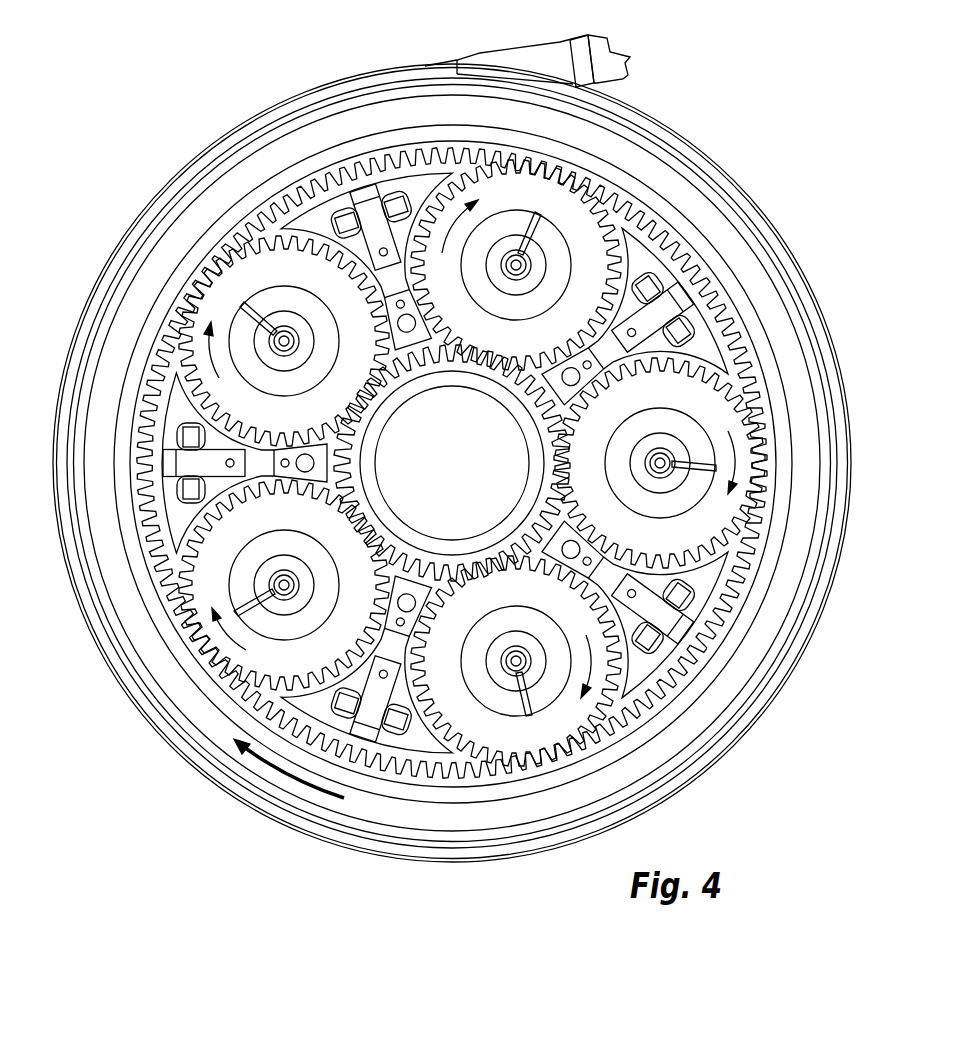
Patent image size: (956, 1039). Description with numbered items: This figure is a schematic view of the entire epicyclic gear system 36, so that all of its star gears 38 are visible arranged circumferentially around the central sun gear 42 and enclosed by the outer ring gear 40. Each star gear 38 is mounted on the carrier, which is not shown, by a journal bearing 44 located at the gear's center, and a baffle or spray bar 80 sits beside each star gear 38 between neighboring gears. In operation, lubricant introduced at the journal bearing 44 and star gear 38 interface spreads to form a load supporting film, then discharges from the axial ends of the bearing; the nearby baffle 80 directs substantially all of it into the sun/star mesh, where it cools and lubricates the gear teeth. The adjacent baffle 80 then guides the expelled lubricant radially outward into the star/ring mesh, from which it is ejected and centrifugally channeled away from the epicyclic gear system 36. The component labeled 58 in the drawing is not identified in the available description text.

The epicyclic gear system 36 is at (768, 178).
The star gear 38 is at (493, 196).
The ring gear 40 is at (447, 772).
The sun gear 42 is at (441, 471).
The journal bearing 44 is at (503, 316).
The lever arm 58 is at (540, 220).
The baffle 80 is at (332, 212).